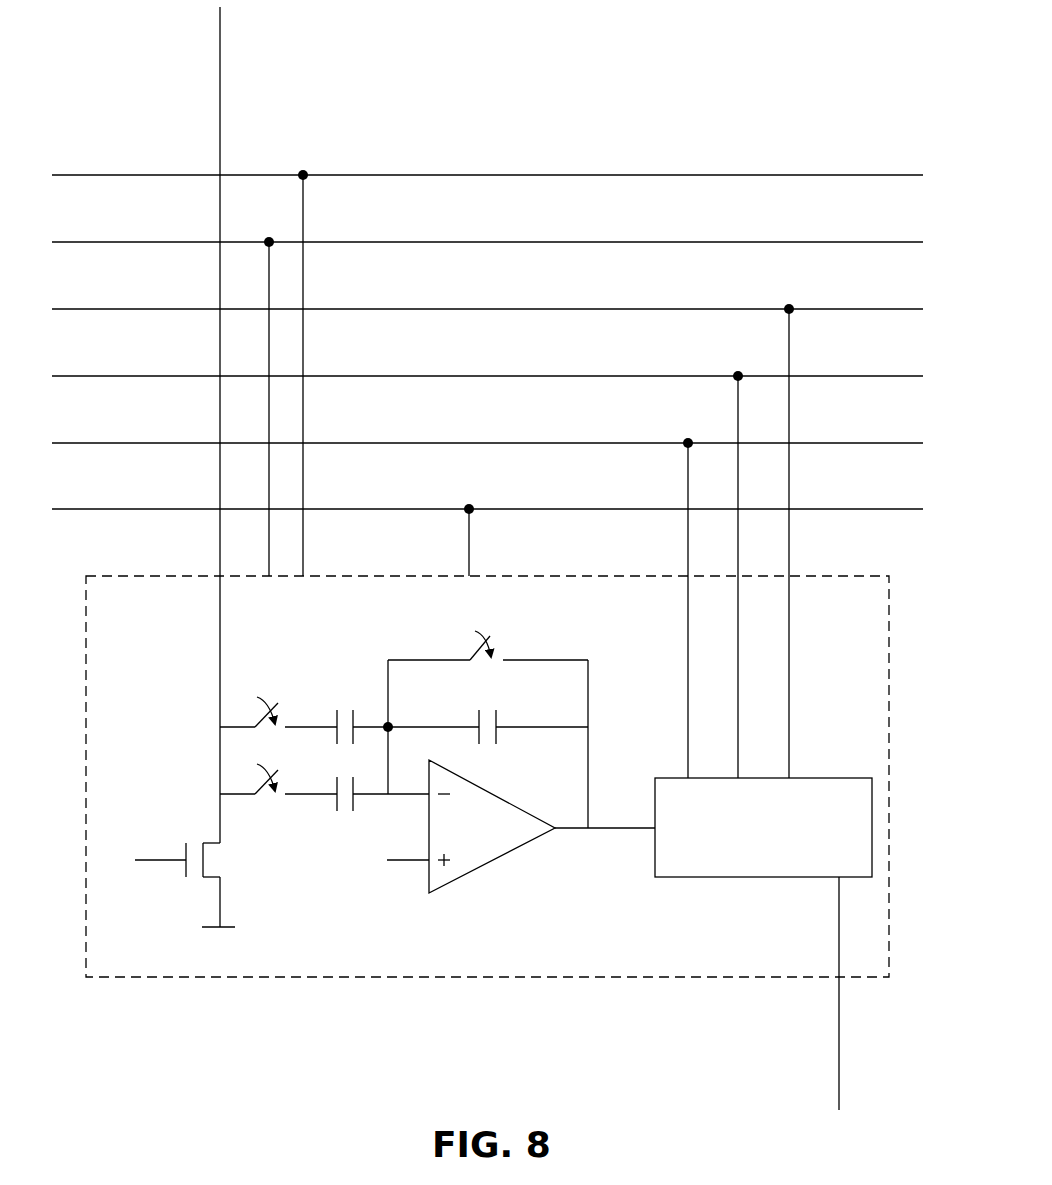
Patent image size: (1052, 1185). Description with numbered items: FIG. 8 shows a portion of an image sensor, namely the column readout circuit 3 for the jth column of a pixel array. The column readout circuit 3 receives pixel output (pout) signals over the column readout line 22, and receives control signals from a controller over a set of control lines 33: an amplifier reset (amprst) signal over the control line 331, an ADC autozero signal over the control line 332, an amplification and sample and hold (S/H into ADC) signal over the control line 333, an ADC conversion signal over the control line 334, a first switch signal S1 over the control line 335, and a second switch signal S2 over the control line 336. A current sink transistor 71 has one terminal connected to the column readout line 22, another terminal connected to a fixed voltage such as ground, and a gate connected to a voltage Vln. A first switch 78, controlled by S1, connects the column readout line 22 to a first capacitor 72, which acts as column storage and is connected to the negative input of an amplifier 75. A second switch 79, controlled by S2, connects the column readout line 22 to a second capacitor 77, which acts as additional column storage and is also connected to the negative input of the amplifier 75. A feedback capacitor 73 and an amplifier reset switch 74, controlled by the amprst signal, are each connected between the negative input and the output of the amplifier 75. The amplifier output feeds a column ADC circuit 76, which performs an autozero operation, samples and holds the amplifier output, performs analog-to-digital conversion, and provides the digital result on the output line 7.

The column readout line 22 is at (220, 40).
The control lines 33 is at (487, 454).
The control line for second switch signal 336 is at (842, 175).
The control line for first switch signal 335 is at (842, 242).
The control line for ADC conversion signal 334 is at (842, 309).
The control line for S/H into ADC signal 333 is at (842, 376).
The control line for ADC autozero signal 332 is at (842, 443).
The control line for amplifier reset signal 331 is at (842, 509).
The column readout circuit 3 is at (129, 619).
The current sink transistor 71 is at (212, 875).
The first capacitor 72 is at (336, 803).
The feedback capacitor 73 is at (497, 736).
The amplifier reset switch 74 is at (472, 651).
The amplifier 75 is at (487, 862).
The column ADC circuit 76 is at (752, 849).
The second capacitor 77 is at (336, 716).
The first switch 78 is at (262, 784).
The second switch 79 is at (262, 717).
The output line 7 is at (839, 1045).